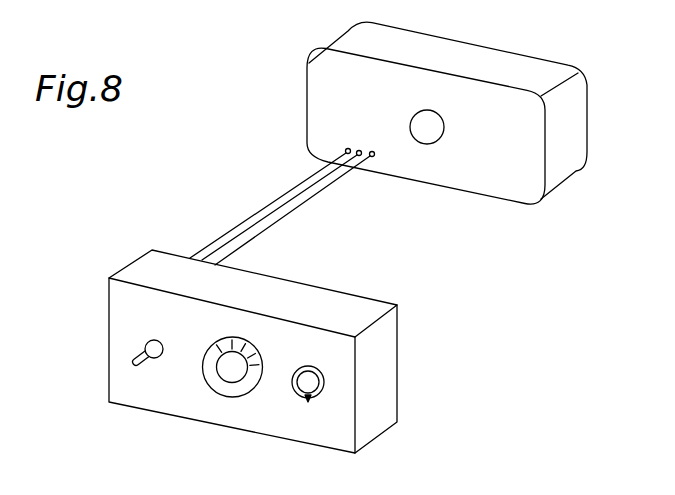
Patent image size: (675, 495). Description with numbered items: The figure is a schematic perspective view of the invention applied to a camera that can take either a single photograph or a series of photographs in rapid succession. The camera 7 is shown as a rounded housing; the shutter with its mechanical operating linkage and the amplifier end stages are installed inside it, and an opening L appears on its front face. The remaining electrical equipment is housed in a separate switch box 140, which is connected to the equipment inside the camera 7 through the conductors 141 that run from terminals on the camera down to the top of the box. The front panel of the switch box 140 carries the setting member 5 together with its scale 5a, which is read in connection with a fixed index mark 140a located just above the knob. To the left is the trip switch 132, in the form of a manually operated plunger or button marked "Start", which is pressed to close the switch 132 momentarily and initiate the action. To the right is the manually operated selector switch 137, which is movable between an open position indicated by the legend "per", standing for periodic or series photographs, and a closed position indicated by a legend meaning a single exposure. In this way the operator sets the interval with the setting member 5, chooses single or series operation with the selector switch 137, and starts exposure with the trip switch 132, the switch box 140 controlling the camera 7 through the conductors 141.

The camera 7 is at (468, 193).
The lamp L is at (444, 127).
The conductors 141 is at (287, 213).
The switch box 140 is at (193, 412).
The index mark 140a is at (233, 324).
The trip switch 132 is at (135, 364).
The setting member 5 is at (249, 381).
The scale 5a is at (257, 347).
The selector switch 137 is at (313, 383).